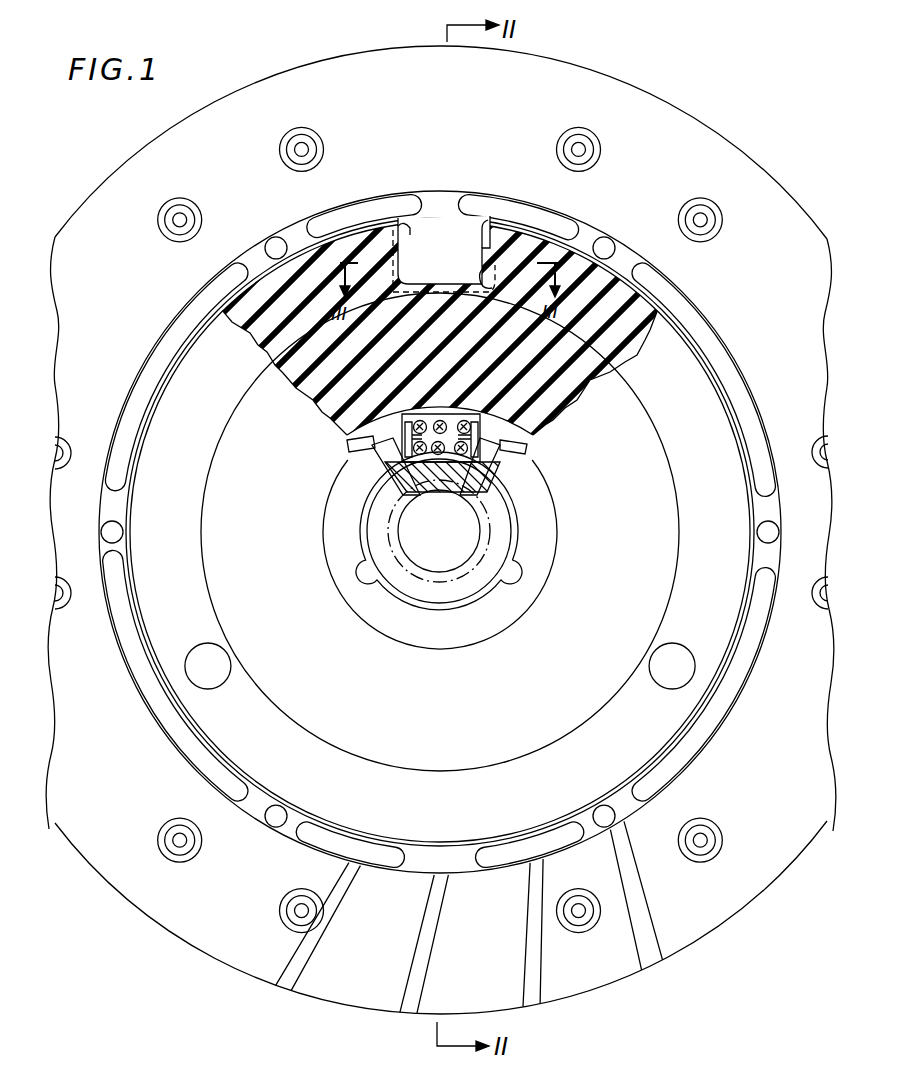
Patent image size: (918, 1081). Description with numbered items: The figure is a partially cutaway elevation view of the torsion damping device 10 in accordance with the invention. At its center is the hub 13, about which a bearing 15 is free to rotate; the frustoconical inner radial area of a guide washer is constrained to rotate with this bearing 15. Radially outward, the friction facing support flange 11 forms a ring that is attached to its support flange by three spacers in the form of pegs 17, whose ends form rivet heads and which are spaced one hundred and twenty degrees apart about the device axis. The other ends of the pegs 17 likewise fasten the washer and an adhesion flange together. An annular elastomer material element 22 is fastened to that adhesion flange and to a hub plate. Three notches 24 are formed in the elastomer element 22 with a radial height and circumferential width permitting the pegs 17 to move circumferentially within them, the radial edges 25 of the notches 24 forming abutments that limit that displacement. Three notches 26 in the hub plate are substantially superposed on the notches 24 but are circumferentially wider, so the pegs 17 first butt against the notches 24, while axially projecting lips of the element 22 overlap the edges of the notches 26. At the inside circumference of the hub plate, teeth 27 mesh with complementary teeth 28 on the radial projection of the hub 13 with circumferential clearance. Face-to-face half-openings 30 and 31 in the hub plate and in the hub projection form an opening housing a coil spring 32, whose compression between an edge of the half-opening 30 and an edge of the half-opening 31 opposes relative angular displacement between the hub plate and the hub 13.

The device 10 is at (733, 132).
The friction facing support flange 11 is at (583, 247).
The hub 13 is at (528, 527).
The bearing 15 is at (348, 537).
The pegs 17 is at (445, 246).
The annular elastomer material element 22 is at (266, 262).
The notches 24 is at (485, 293).
The radial edges 25 is at (413, 214).
The notches 26 is at (398, 290).
The teeth 27 is at (530, 452).
The teeth 28 is at (365, 448).
The half-opening 30 is at (466, 413).
The half-opening 31 is at (448, 440).
The coil spring 32 is at (446, 408).